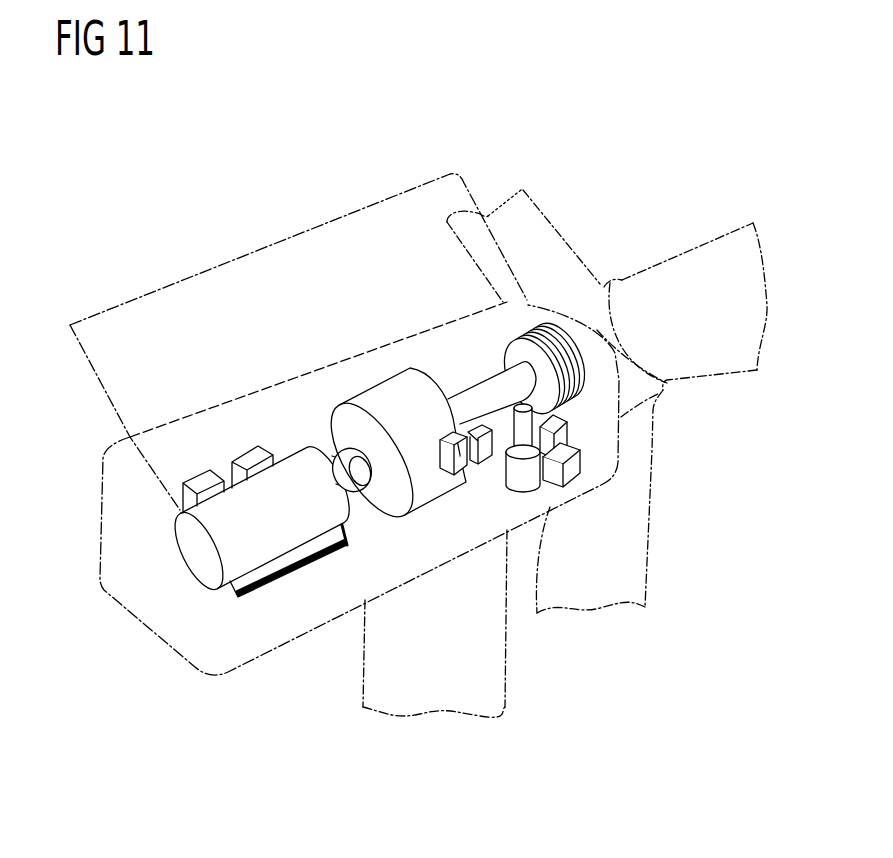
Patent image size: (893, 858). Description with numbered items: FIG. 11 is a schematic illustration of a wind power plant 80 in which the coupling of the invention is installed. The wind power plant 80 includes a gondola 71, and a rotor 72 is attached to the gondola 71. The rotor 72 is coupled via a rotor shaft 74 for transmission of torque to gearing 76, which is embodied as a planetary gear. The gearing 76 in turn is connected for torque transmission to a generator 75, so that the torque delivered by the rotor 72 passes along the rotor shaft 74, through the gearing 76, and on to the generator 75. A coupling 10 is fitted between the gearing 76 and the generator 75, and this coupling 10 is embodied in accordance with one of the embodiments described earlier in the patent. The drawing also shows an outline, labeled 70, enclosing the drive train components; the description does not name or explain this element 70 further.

The wind power plant 80 is at (153, 192).
The nacelle 70 is at (264, 248).
The gondola 71 is at (253, 392).
The rotor 72 is at (642, 553).
The rotor shaft 74 is at (490, 381).
The generator 75 is at (193, 568).
The gearing 76 is at (387, 380).
The coupling 10 is at (365, 493).